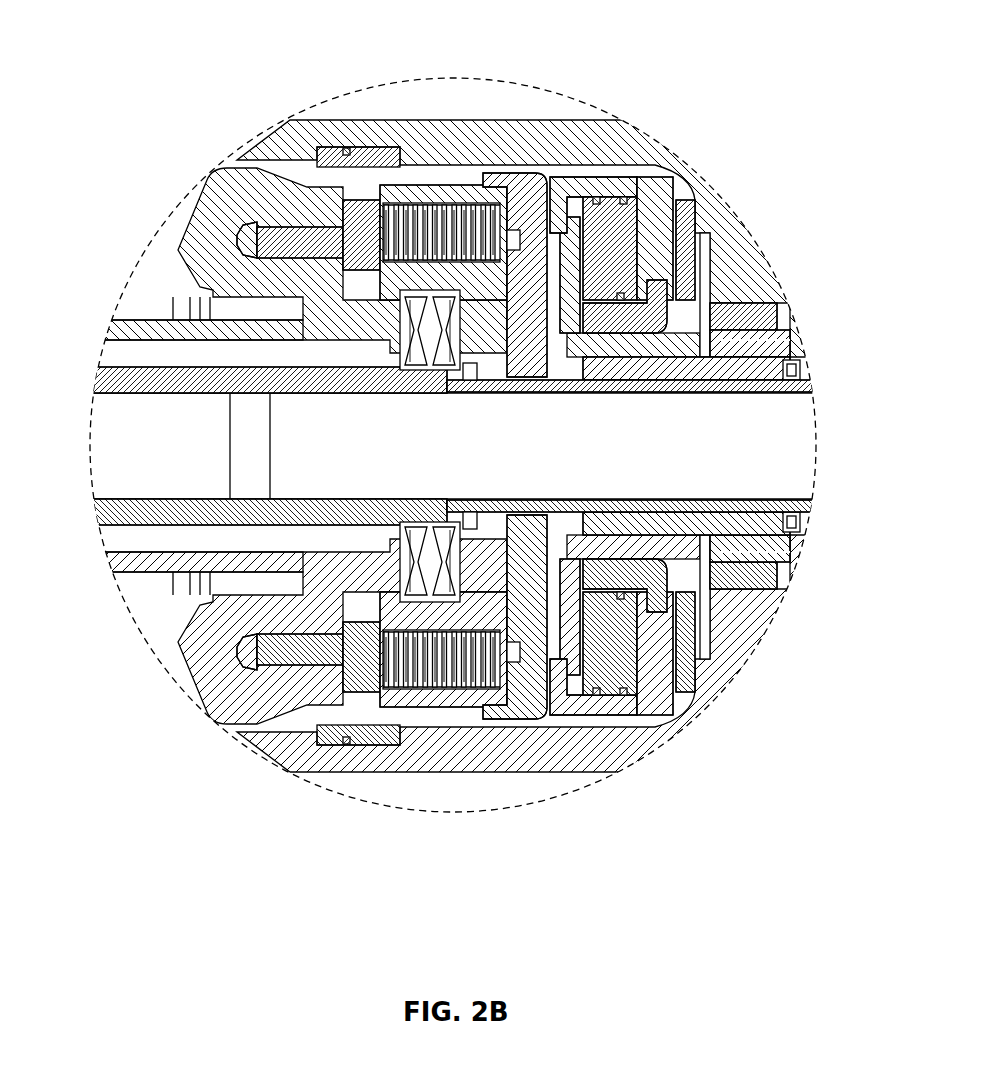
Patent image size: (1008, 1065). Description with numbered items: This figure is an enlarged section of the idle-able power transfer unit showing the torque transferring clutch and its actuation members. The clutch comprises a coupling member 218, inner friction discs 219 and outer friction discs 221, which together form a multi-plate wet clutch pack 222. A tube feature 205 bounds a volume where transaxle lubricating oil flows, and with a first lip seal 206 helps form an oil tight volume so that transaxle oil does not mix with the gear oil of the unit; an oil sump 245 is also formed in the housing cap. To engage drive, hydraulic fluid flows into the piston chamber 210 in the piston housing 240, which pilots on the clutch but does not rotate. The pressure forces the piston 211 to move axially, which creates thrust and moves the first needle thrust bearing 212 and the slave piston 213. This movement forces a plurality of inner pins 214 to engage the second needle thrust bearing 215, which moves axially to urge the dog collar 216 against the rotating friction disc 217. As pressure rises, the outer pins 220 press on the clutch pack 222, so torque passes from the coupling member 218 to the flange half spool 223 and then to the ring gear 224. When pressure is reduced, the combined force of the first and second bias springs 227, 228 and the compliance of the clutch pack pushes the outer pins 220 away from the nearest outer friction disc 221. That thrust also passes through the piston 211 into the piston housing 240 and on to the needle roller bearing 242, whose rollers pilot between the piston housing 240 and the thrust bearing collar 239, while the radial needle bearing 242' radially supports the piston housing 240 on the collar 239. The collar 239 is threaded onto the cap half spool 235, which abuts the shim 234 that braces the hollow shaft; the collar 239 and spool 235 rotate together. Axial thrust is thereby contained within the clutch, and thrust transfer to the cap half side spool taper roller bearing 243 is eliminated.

The tube feature 205 is at (630, 330).
The first lip seal 206 is at (800, 358).
The piston chamber 210 is at (640, 683).
The piston 211 is at (610, 227).
The first needle thrust bearing 212 is at (636, 180).
The slave piston 213 is at (573, 687).
The inner pins 214 is at (562, 620).
The second needle thrust bearing 215 is at (517, 620).
The dog collar 216 is at (487, 357).
The friction disc 217 is at (432, 380).
The coupling member 218 is at (232, 393).
The inner friction discs 219 is at (447, 683).
The outer pins 220 is at (537, 240).
The outer friction discs 221 is at (437, 690).
The multi-plate wet clutch pack 222 is at (427, 749).
The flange half spool 223 is at (135, 333).
The ring gear 224 is at (190, 267).
The first bias spring 227 is at (457, 533).
The second bias spring 228 is at (398, 535).
The shim 234 is at (517, 500).
The cap half spool 235 is at (652, 517).
The thrust bearing collar 239 is at (680, 267).
The piston housing 240 is at (647, 200).
The needle roller bearing 242 is at (753, 227).
The radial needle bearing 242' is at (686, 393).
The cap half side spool taper roller bearing 243 is at (757, 313).
The oil sump 245 is at (703, 287).